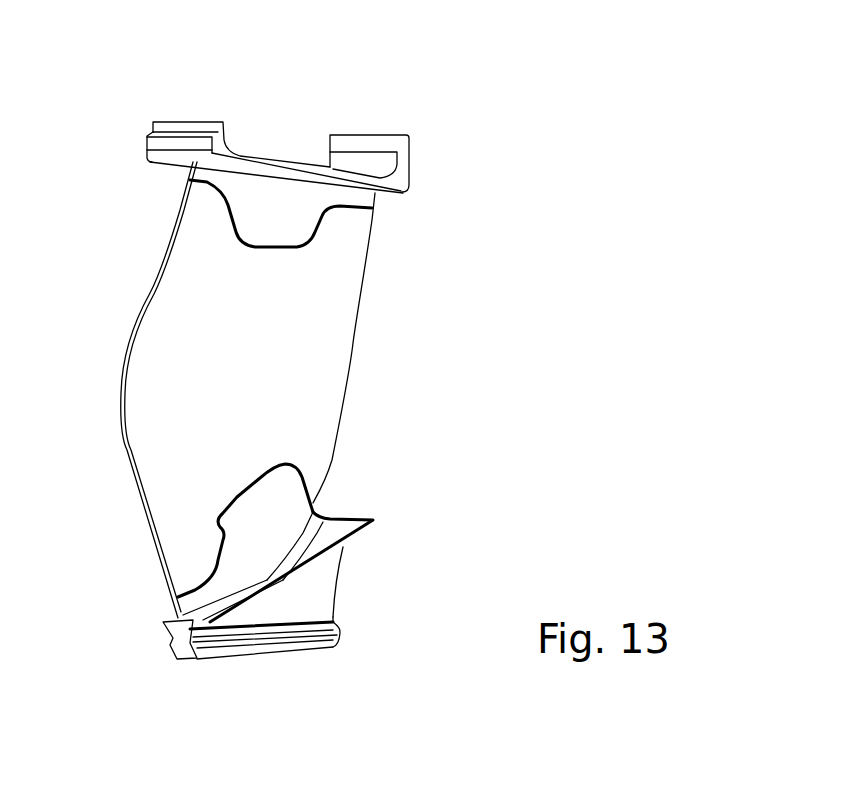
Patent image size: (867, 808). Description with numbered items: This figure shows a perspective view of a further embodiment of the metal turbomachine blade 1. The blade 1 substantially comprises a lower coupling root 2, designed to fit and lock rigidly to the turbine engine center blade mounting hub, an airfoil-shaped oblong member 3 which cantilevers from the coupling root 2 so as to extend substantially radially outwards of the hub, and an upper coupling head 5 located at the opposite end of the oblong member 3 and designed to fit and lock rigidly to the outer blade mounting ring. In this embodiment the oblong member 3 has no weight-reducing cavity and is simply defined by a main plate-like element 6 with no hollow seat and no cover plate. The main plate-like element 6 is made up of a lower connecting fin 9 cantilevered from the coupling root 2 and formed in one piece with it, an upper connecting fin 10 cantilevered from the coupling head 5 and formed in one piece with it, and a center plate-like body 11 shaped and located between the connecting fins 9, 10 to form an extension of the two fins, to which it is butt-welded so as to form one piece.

The blade 1 is at (522, 273).
The lower coupling root 2 is at (303, 612).
The airfoil-shaped oblong member 3 is at (140, 448).
The upper coupling head 5 is at (272, 158).
The main plate-like element 6 is at (448, 250).
The lower connecting fin 9 is at (273, 507).
The upper connecting fin 10 is at (308, 210).
The center plate-like body 11 is at (322, 345).